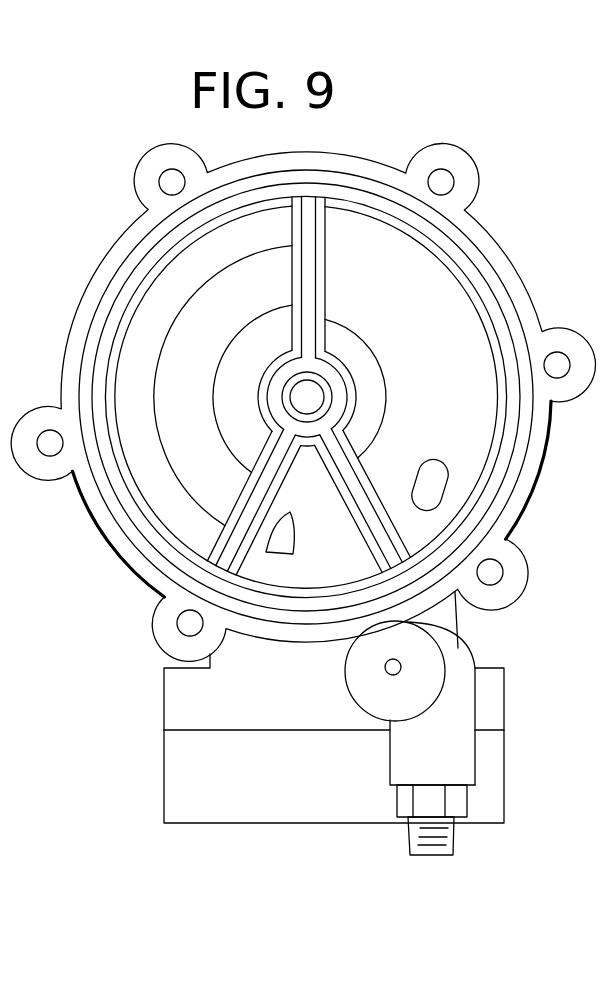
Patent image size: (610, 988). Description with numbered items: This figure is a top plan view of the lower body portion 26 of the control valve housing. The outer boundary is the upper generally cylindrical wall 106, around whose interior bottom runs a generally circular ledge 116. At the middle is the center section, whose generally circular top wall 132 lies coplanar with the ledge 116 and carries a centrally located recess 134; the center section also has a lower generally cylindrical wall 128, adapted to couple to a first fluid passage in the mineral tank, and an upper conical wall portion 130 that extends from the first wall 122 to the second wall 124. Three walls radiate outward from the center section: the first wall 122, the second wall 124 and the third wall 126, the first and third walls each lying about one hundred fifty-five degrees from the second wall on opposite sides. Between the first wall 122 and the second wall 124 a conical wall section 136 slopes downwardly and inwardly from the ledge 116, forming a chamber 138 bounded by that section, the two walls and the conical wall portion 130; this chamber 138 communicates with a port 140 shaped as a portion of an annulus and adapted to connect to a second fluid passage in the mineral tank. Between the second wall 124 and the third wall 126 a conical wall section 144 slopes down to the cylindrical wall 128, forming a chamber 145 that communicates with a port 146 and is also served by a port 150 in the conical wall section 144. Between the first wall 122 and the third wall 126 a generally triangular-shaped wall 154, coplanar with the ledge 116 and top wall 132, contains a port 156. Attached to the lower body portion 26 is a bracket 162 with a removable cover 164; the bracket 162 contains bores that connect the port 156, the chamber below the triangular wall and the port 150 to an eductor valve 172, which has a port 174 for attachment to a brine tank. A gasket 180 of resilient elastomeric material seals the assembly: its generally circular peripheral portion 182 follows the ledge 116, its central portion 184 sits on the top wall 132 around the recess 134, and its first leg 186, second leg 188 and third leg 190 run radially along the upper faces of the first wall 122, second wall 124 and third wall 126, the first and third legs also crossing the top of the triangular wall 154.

The lower body portion 26 is at (498, 221).
The upper generally cylindrical wall 106 is at (522, 291).
The generally circular ledge 116 is at (513, 318).
The chamber 138 is at (132, 378).
The conical wall section 144 is at (472, 437).
The chamber 145 is at (472, 411).
The peripheral portion 182 is at (493, 497).
The gasket 180 is at (511, 475).
The second wall 124 is at (291, 277).
The second leg 188 is at (310, 245).
The first wall 122 is at (252, 495).
The first leg 186 is at (230, 561).
The third wall 126 is at (360, 476).
The third leg 190 is at (387, 556).
The top wall 132 is at (352, 365).
The central portion 184 is at (285, 378).
The recess 134 is at (321, 388).
The conical wall section 136 is at (152, 343).
The lower generally cylindrical wall 128 is at (214, 387).
The upper conical wall portion 130 is at (233, 402).
The port 146 is at (347, 347).
The port 140 is at (197, 450).
The generally triangular-shaped wall 154 is at (351, 541).
The port 150 is at (432, 468).
The port 156 is at (281, 543).
The eductor valve 172 is at (453, 663).
The bracket 162 is at (505, 701).
The removable cover 164 is at (505, 776).
The port 174 is at (443, 857).